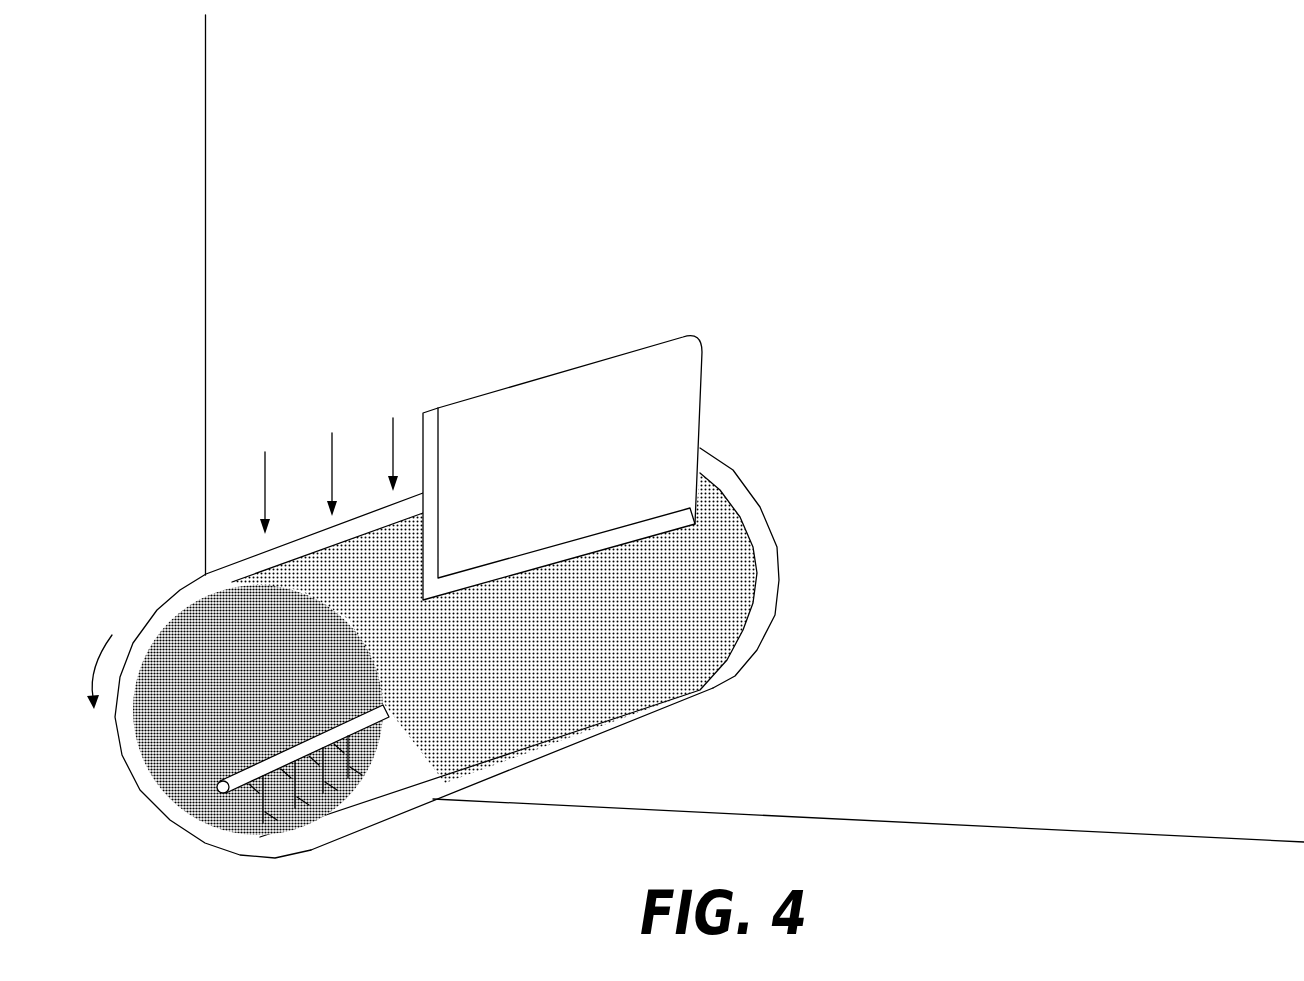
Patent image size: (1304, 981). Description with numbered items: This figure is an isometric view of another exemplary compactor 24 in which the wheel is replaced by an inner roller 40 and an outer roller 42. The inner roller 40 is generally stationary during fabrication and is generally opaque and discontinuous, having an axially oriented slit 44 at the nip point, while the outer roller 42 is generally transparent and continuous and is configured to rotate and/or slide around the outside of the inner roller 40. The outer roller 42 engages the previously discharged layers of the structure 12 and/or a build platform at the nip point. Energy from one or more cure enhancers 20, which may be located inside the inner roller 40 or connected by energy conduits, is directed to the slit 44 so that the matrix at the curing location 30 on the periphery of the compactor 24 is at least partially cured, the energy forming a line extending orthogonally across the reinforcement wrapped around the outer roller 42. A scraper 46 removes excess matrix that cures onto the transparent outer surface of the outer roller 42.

The structure 12 is at (926, 822).
The cure enhancer 20 is at (217, 790).
The compactor 24 is at (508, 638).
The curing location 30 is at (433, 800).
The inner roller 40 is at (757, 549).
The outer roller 42 is at (498, 665).
The slit 44 is at (250, 835).
The scraper 46 is at (701, 393).